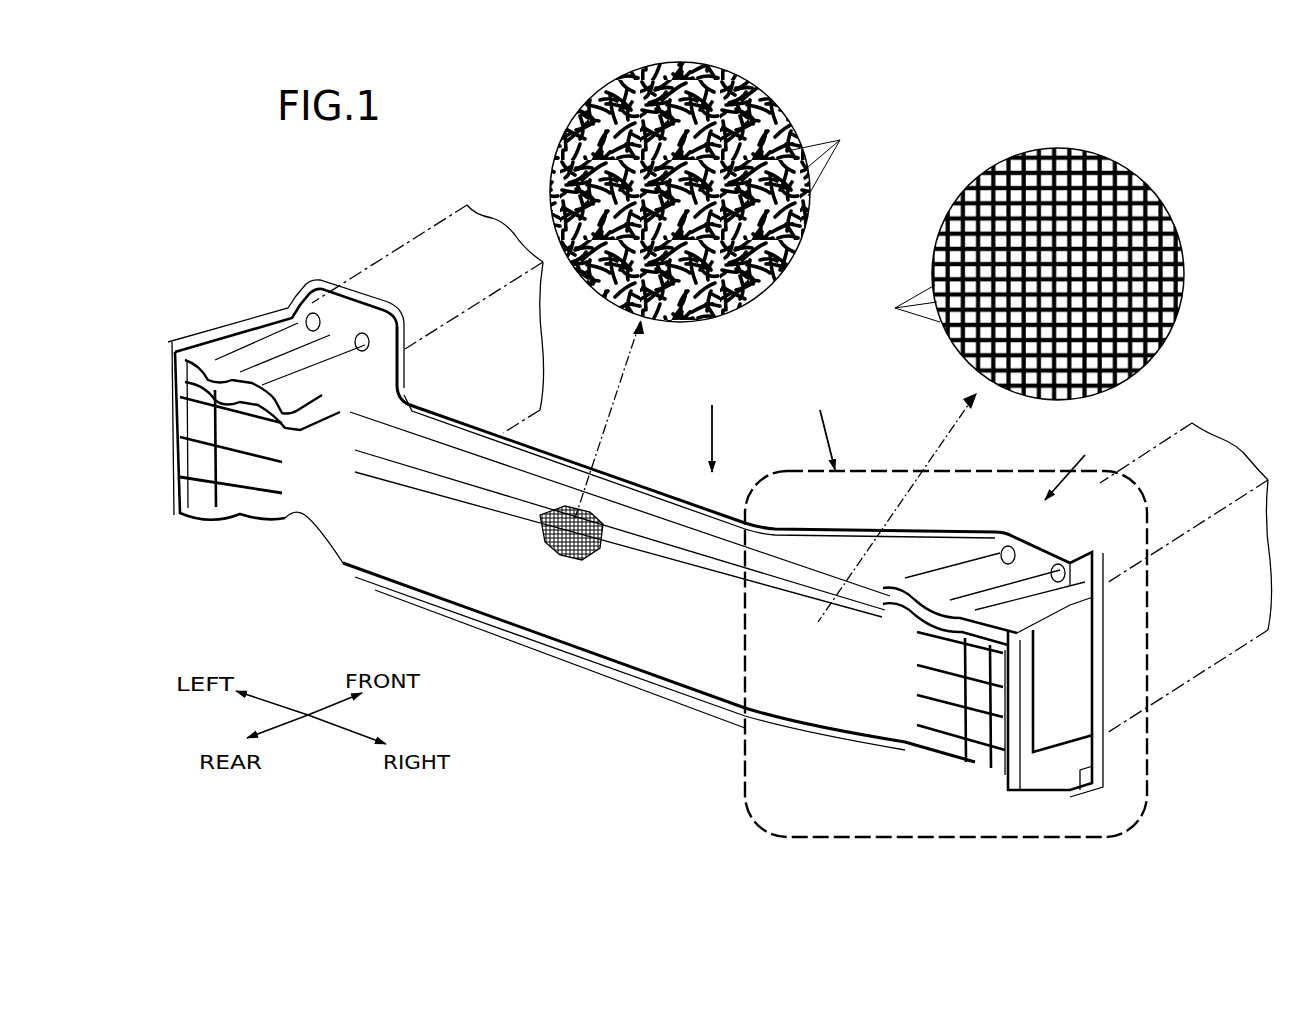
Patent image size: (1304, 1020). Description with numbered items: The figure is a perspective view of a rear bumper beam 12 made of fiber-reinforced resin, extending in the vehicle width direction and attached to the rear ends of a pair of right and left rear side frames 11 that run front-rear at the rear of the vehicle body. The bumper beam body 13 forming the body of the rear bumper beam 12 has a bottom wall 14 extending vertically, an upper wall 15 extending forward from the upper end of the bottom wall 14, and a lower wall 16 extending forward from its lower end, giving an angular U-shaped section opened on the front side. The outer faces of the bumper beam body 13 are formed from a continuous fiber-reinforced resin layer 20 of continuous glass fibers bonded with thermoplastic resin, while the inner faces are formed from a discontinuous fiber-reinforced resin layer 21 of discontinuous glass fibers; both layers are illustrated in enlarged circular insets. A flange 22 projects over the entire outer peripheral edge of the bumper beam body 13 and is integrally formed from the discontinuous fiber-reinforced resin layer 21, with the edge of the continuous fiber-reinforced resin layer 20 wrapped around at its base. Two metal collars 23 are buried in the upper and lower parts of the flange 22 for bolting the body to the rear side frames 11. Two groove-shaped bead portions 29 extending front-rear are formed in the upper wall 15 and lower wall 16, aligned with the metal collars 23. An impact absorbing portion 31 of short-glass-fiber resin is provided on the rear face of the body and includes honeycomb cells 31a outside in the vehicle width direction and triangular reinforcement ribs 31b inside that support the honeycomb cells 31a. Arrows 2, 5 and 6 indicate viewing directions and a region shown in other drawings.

The direction of view 2 is at (708, 424).
The enlarged region 5 is at (946, 607).
The direction of view 6 is at (1071, 462).
The rear side frame 11 is at (400, 245).
The rear bumper beam 12 is at (580, 715).
The bumper beam body 13 is at (503, 648).
The bottom wall 14 is at (428, 563).
The upper wall 15 is at (550, 513).
The lower wall 16 is at (622, 688).
The continuous fiber-reinforced resin layer 20 is at (1075, 145).
The discontinuous fiber-reinforced resin layer 21 is at (602, 104).
The flange 22 is at (665, 483).
The metal collar 23 is at (360, 333).
The groove-shaped bead portion 29 is at (278, 356).
The impact absorbing portion 31 is at (208, 522).
The honeycomb cell 31a is at (210, 495).
The reinforcement rib 31b is at (262, 500).